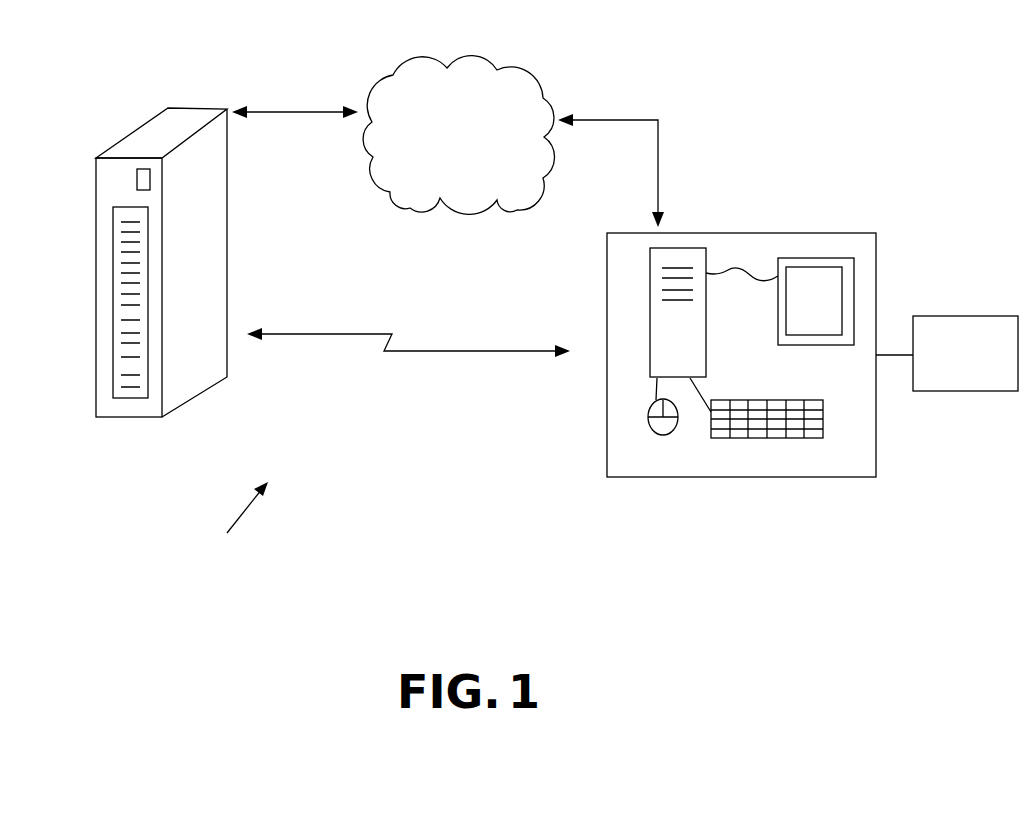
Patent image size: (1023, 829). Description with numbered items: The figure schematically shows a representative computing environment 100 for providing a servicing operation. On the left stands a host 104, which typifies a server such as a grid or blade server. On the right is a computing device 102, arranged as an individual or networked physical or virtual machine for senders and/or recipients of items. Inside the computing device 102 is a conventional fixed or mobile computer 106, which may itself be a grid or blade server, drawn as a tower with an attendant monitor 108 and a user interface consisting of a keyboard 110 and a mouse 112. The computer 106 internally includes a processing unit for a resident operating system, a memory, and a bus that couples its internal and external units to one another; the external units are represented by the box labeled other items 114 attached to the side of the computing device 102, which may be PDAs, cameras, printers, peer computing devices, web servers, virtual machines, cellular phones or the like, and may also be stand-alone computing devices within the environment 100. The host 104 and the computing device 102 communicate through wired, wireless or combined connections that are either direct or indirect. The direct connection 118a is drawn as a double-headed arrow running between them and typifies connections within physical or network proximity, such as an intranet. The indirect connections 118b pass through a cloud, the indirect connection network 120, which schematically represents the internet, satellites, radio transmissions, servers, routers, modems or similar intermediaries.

The computing environment 100 is at (237, 522).
The computing device 102 is at (744, 233).
The host 104 is at (96, 296).
The computer 106 is at (650, 326).
The monitor 108 is at (778, 316).
The keyboard 110 is at (740, 438).
The mouse 112 is at (670, 435).
The other items 114 is at (950, 316).
The direct connection 118a is at (443, 350).
The indirect connection 118b is at (290, 111).
The indirect connection network 120 is at (472, 52).